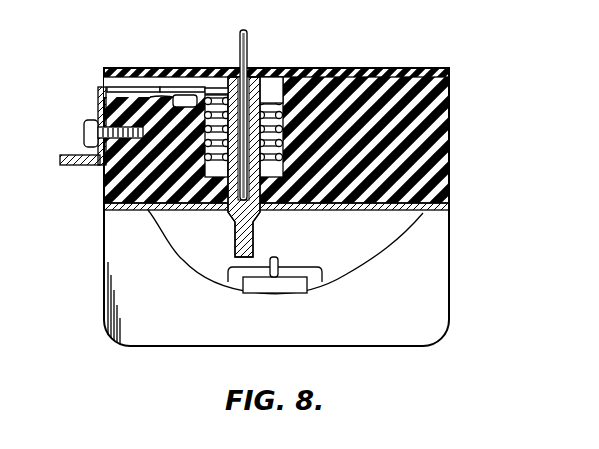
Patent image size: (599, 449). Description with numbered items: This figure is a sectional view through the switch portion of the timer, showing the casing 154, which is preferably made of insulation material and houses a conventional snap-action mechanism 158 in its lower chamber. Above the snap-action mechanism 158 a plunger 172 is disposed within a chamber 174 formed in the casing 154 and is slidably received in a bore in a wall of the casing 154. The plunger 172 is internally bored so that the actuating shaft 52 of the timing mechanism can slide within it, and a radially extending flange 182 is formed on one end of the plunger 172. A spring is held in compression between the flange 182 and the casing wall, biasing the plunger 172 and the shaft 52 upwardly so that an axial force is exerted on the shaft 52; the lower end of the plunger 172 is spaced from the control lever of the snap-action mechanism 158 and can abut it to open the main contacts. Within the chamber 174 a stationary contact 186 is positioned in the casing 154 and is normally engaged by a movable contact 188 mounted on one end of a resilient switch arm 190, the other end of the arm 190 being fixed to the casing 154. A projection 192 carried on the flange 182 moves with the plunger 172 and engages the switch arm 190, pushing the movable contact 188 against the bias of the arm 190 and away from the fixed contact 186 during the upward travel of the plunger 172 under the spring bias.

The actuating shaft 52 is at (250, 38).
The casing 154 is at (449, 133).
The snap-action mechanism 158 is at (312, 262).
The plunger 172 is at (255, 245).
The chamber 174 is at (283, 75).
The radially extending flange 182 is at (305, 70).
The stationary contact 186 is at (104, 106).
The movable contact 188 is at (183, 90).
The resilient switch arm 190 is at (133, 90).
The projection 192 is at (213, 88).